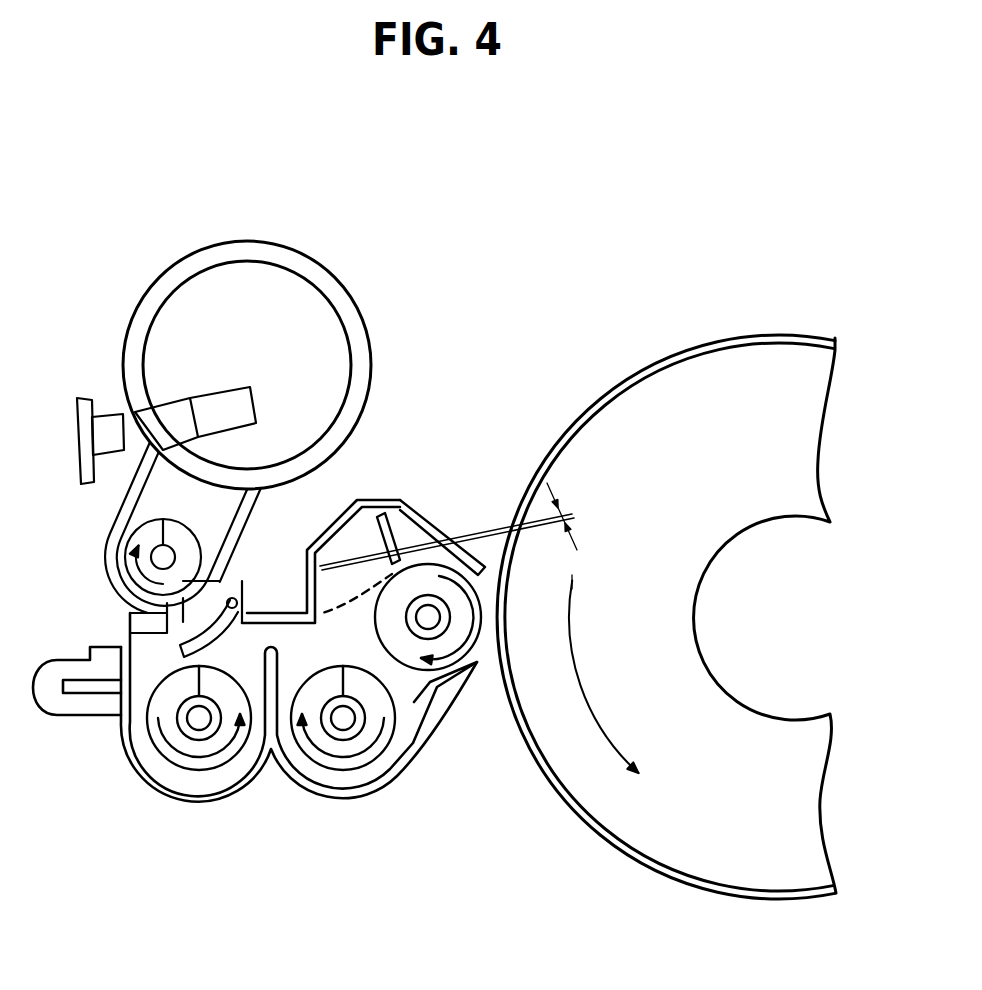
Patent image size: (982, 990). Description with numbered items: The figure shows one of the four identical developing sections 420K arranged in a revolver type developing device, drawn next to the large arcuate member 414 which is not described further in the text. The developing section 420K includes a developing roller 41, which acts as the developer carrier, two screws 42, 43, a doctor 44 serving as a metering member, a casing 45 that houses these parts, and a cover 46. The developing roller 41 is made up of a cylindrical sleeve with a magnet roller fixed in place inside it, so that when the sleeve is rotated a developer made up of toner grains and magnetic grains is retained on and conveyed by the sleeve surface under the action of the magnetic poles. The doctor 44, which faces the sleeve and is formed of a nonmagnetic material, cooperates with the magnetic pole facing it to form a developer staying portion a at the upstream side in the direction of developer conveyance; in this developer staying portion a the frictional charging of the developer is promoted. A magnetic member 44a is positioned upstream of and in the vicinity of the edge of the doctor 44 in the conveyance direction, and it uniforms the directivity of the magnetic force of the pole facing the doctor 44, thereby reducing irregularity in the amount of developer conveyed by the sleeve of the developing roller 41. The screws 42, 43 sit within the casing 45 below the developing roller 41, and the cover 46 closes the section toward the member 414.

The developing section 420K is at (350, 162).
The intermediate transfer belt / drum 414 is at (728, 378).
The developing roller 41 is at (425, 665).
The screw 42 is at (343, 772).
The screw 43 is at (199, 772).
The doctor 44 is at (405, 498).
The magnetic member 44a is at (347, 557).
The casing 45 is at (127, 745).
The cover 46 is at (448, 541).
The developer staying portion a is at (343, 615).